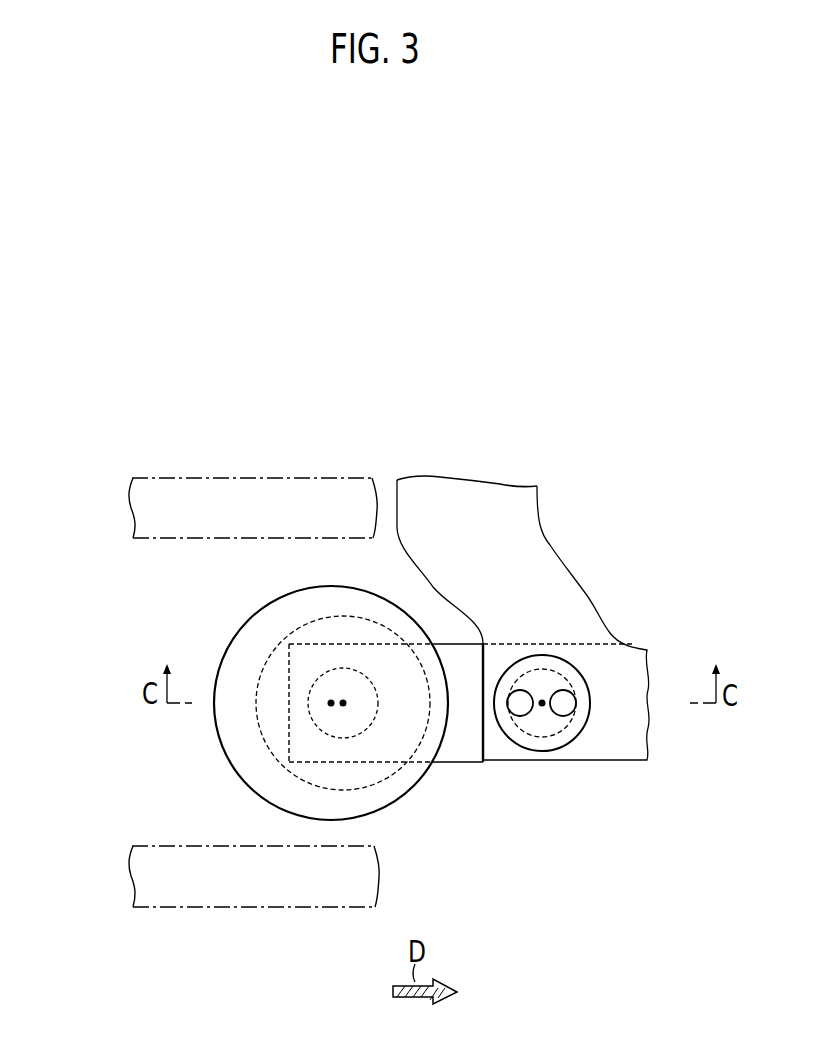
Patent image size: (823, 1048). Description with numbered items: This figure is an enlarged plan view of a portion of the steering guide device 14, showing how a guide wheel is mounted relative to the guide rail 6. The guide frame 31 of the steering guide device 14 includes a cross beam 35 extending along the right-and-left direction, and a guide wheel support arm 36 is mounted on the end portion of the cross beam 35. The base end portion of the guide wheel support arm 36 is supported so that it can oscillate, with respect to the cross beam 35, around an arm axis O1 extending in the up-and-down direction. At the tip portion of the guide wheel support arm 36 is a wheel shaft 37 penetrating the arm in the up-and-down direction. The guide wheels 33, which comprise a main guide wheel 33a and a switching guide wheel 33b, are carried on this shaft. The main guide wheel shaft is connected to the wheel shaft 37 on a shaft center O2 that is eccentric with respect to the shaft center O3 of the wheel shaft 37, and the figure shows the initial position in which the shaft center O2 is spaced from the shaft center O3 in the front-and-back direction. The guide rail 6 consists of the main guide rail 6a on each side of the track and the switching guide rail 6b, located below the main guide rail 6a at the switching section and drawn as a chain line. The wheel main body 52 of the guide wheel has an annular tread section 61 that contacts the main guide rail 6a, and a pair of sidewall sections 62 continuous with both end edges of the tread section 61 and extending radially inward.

The steering guide device 14 is at (542, 626).
The guide frame 31 is at (523, 655).
The cross beam 35 is at (473, 503).
The guide wheel support arm 36 is at (466, 745).
The wheel shaft 37 is at (368, 728).
The guide wheels 33 is at (246, 722).
The main guide wheel 33a is at (228, 780).
The switching guide wheel 33b is at (250, 734).
The tread section 61 is at (246, 722).
The wheel main body 52 is at (246, 728).
The sidewall section 62 is at (246, 761).
The guide rail 6 is at (254, 673).
The main guide rail 6a is at (230, 907).
The switching guide rail 6b is at (233, 478).
The arm axis O1 is at (542, 707).
The shaft center of the main guide wheel shaft O2 is at (331, 700).
The shaft center of the wheel shaft O3 is at (343, 700).